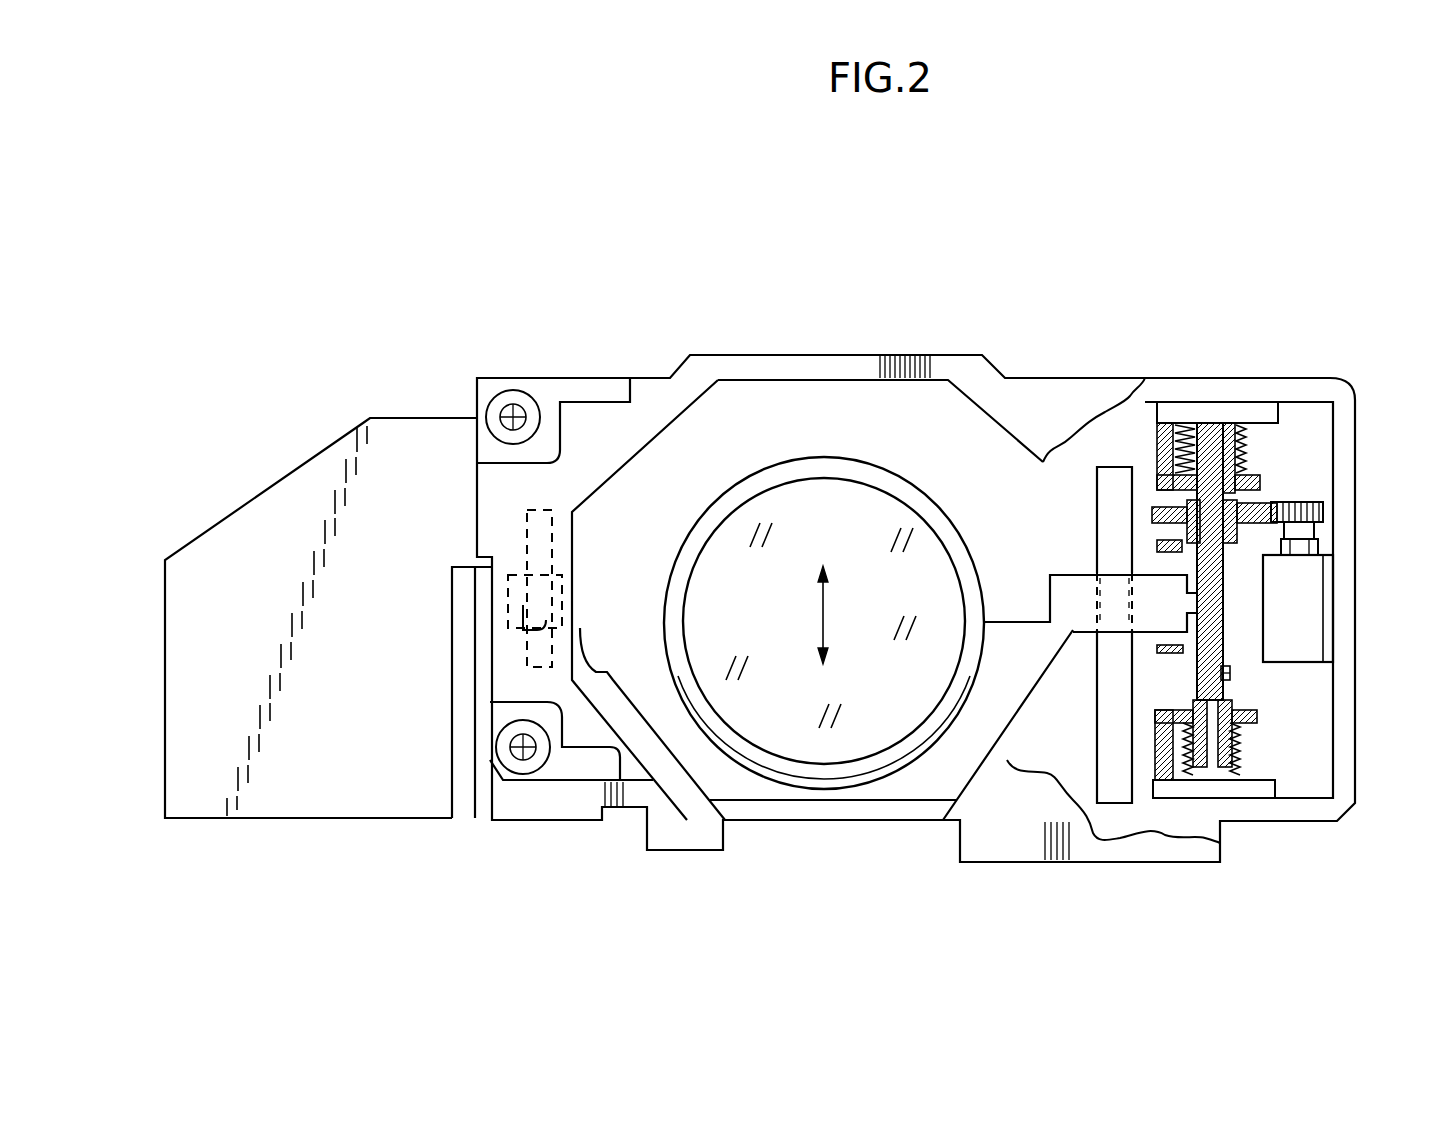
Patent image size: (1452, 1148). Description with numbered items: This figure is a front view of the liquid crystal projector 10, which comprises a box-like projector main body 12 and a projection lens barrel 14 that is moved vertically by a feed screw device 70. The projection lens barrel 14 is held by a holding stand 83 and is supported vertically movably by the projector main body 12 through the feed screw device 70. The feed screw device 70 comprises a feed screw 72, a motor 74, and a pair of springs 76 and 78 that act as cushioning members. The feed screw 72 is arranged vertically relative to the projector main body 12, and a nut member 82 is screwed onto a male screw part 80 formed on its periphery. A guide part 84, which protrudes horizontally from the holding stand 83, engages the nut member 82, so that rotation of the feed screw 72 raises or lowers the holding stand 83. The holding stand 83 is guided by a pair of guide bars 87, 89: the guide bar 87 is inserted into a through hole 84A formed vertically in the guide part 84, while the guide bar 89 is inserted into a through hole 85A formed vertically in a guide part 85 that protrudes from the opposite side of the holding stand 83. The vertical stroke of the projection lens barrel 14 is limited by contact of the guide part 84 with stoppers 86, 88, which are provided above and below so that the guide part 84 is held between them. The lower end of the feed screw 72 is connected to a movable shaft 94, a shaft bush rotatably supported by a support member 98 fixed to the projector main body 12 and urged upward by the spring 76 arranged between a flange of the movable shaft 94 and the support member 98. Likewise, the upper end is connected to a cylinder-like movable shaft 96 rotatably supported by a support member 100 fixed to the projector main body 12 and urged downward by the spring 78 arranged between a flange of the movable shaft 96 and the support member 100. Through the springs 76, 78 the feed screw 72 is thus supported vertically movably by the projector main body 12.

The liquid crystal projector 10 is at (1246, 217).
The projector main body 12 is at (416, 412).
The projection lens barrel 14 is at (897, 465).
The feed screw device 70 is at (1300, 465).
The feed screw 72 is at (1330, 558).
The motor 74 is at (1317, 592).
The spring 76 is at (1240, 752).
The spring 78 is at (1253, 448).
The male screw part 80 is at (1232, 674).
The nut member 82 is at (1245, 601).
The holding stand 83 is at (780, 790).
The guide part 84 is at (1118, 657).
The through hole 84A is at (1100, 608).
The guide part 85 is at (530, 607).
The through hole 85A is at (545, 625).
The stopper 86 is at (1170, 655).
The guide bar 87 is at (1107, 533).
The stopper 88 is at (1160, 545).
The guide bar 89 is at (527, 515).
The movable shaft 94 is at (1200, 782).
The movable shaft 96 is at (1205, 428).
The support member 98 is at (1147, 785).
The support member 100 is at (1143, 440).